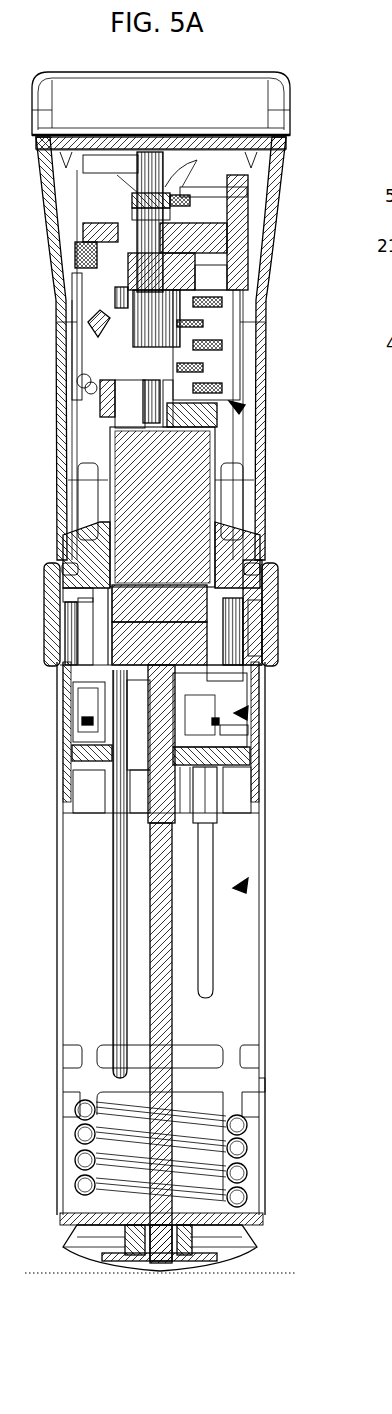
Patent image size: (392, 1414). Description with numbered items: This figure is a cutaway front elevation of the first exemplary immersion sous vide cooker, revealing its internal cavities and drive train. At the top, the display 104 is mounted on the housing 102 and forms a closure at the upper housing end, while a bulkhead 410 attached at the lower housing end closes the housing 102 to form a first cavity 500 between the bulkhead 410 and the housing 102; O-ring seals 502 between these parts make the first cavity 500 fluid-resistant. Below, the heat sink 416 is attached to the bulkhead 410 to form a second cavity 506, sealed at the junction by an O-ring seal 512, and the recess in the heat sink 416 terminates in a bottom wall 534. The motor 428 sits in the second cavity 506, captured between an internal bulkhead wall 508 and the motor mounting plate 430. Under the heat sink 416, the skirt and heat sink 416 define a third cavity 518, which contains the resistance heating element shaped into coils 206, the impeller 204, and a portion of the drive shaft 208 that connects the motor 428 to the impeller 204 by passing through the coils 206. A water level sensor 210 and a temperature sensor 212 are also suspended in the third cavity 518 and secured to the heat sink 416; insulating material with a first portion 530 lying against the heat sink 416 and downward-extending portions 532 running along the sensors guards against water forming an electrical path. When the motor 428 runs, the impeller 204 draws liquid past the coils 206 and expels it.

The display 104 is at (244, 100).
The housing 102 is at (268, 378).
The first cavity 500 is at (243, 409).
The O-ring seals 502 is at (247, 548).
The internal bulkhead wall 508 is at (272, 573).
The bulkhead 410 is at (285, 607).
The motor 428 is at (278, 623).
The O-ring seal 512 is at (278, 662).
The motor mounting plate 430 is at (263, 678).
The second cavity 506 is at (263, 720).
The bottom wall 534 is at (263, 732).
The heat sink 416 is at (263, 745).
The first portion of insulating material 530 is at (233, 780).
The downward-extending portions of insulating material 532 is at (207, 793).
The third cavity 518 is at (247, 870).
The water level sensor 210 is at (213, 923).
The drive shaft 208 is at (170, 1010).
The temperature sensor 212 is at (120, 1033).
The coils 206 is at (266, 1147).
The impeller 204 is at (255, 1247).